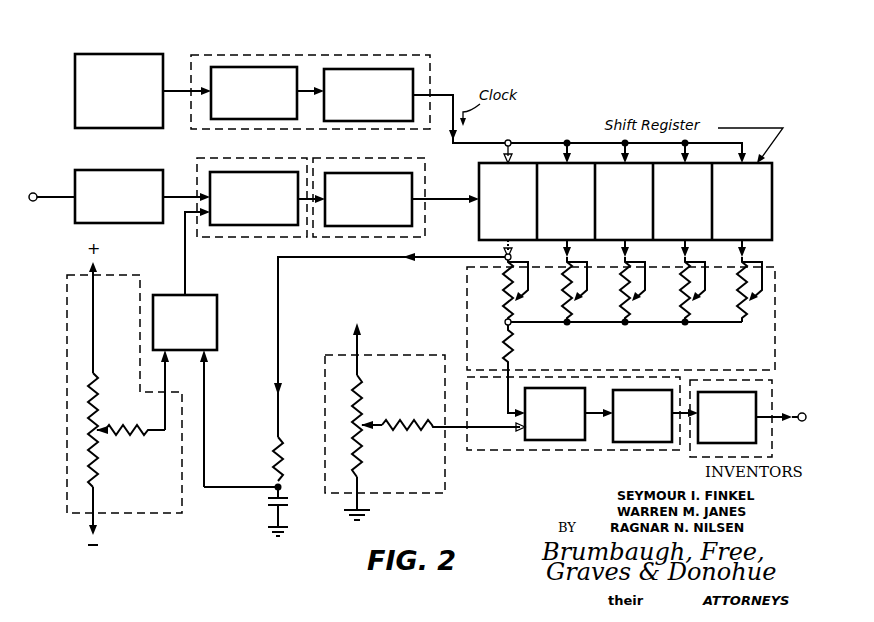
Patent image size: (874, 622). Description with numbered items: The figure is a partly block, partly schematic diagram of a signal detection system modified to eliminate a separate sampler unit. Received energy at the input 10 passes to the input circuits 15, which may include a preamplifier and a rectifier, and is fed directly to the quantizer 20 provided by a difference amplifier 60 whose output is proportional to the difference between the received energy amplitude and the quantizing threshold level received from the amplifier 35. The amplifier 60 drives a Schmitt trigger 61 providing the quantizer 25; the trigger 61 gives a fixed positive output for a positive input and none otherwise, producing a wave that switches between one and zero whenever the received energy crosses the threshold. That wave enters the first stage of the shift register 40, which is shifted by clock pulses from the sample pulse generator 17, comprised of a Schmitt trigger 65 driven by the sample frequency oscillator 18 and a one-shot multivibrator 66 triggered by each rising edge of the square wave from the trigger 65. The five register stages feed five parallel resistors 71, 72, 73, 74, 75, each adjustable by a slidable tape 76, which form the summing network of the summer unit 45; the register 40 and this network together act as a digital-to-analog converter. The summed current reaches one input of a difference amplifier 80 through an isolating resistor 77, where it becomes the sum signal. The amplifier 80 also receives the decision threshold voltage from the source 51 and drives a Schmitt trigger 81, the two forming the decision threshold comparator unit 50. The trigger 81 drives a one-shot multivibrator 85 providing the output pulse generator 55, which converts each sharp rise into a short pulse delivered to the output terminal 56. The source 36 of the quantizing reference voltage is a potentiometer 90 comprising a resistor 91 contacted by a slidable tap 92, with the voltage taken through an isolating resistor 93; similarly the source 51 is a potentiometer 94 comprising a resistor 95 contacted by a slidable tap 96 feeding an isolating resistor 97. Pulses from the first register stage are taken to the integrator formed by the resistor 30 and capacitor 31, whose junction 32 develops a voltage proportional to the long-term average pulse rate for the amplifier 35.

The input 10 is at (35, 193).
The input circuits 15 is at (127, 170).
The sample pulse generator 17 is at (248, 55).
The sample frequency oscillator 18 is at (116, 54).
The quantizer 20 is at (232, 158).
The quantizer 25 is at (372, 158).
The resistor 30 is at (283, 448).
The capacitor 31 is at (287, 503).
The junction 32 is at (281, 487).
The amplifier 35 is at (217, 317).
The source of the reference voltage 36 is at (178, 513).
The shift register 40 is at (479, 173).
The summer unit 45 is at (467, 313).
The decision threshold comparator unit 50 is at (509, 452).
The source of the decision threshold voltage 51 is at (425, 496).
The output pulse generator 55 is at (703, 456).
The output terminal 56 is at (804, 413).
The difference amplifier 60 is at (252, 172).
The Schmitt trigger 61 is at (356, 173).
The Schmitt trigger 65 is at (270, 67).
The one-shot multivibrator 66 is at (365, 69).
The parallel resistor 71 is at (512, 310).
The parallel resistor 72 is at (571, 310).
The parallel resistor 73 is at (629, 310).
The parallel resistor 74 is at (689, 310).
The parallel resistor 75 is at (746, 310).
The tape 76 is at (506, 289).
The isolating resistor 77 is at (513, 350).
The difference amplifier 80 is at (552, 440).
The Schmitt trigger 81 is at (612, 437).
The one-shot multivibrator 85 is at (760, 436).
The potentiometer 90 is at (100, 447).
The resistor 91 is at (97, 381).
The slidable tap 92 is at (101, 424).
The isolating resistor 93 is at (136, 433).
The potentiometer 94 is at (369, 432).
The resistor 95 is at (363, 383).
The slidable tap 96 is at (368, 421).
The isolating resistor 97 is at (453, 442).